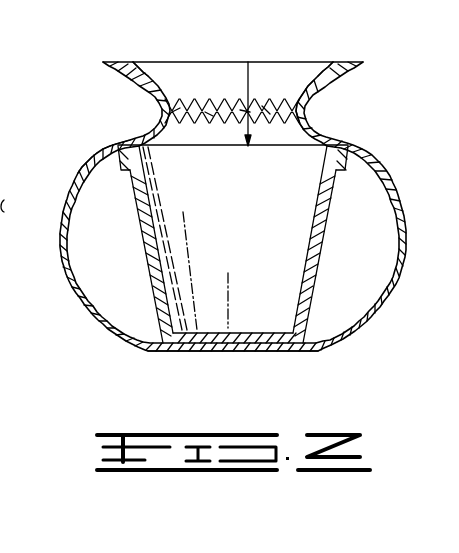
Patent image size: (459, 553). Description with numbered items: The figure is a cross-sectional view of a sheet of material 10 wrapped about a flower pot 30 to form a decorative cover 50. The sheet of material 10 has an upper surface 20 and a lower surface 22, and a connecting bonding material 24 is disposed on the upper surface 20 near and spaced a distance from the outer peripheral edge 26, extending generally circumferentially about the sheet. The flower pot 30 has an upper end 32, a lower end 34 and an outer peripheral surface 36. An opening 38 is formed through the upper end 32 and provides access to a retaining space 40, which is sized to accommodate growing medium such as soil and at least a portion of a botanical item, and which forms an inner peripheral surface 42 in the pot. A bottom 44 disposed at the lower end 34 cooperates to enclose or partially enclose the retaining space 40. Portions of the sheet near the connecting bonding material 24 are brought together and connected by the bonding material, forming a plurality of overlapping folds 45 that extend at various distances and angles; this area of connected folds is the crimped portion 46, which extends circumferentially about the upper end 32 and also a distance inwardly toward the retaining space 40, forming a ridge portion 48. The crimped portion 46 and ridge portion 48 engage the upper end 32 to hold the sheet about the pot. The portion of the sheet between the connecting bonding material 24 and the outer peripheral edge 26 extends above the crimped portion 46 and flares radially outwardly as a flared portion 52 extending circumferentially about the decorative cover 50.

The sheet of material 10 is at (103, 333).
The upper surface 20 is at (72, 247).
The lower surface 22 is at (72, 288).
The connecting bonding material 24 is at (287, 117).
The outer peripheral edge 26 is at (109, 62).
The flower pot 30 is at (313, 273).
The upper end 32 is at (342, 143).
The lower end 34 is at (289, 345).
The outer peripheral surface 36 is at (325, 220).
The opening 38 is at (146, 137).
The retaining space 40 is at (248, 78).
The inner peripheral surface 42 is at (160, 256).
The bottom 44 is at (216, 353).
The overlapping folds 45 is at (193, 105).
The crimped portion 46 is at (318, 95).
The ridge portion 48 is at (147, 145).
The decorative cover 50 is at (79, 159).
The flared portion 52 is at (130, 69).